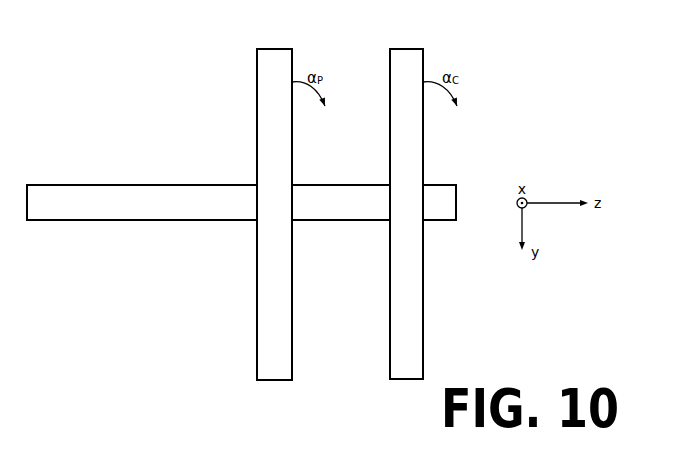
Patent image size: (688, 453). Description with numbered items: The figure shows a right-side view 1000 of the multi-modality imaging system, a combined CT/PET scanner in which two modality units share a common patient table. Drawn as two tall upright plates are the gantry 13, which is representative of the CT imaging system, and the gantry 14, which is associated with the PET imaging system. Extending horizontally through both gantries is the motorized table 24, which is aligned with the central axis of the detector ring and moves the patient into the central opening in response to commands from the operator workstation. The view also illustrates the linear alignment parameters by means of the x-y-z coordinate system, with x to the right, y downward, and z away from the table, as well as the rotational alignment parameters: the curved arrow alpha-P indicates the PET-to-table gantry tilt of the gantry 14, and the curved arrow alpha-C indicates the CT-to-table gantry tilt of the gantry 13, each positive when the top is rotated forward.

The right-side view 1000 is at (292, 199).
The gantry 13 is at (407, 49).
The gantry 14 is at (274, 49).
The motorized table 24 is at (102, 185).